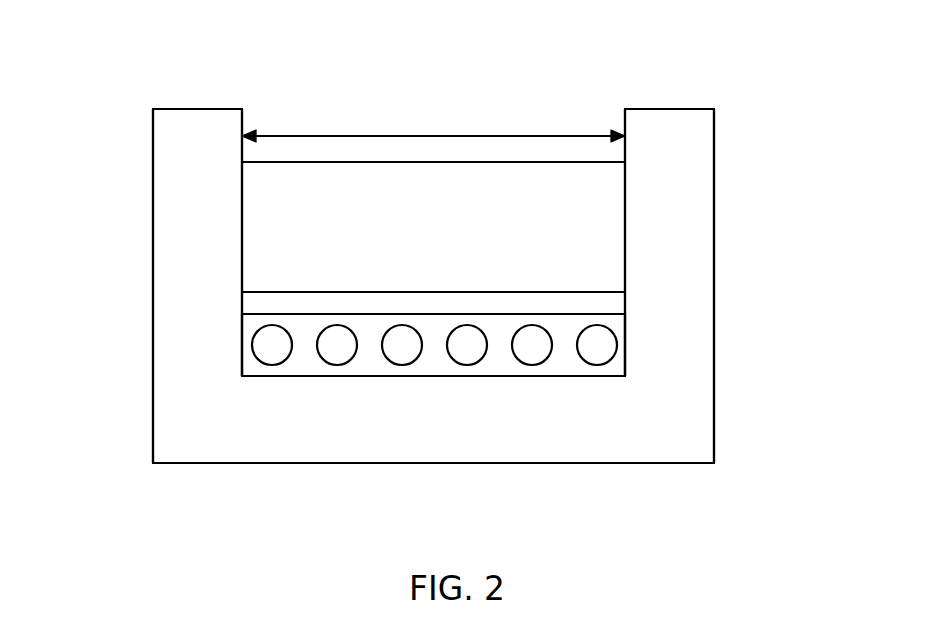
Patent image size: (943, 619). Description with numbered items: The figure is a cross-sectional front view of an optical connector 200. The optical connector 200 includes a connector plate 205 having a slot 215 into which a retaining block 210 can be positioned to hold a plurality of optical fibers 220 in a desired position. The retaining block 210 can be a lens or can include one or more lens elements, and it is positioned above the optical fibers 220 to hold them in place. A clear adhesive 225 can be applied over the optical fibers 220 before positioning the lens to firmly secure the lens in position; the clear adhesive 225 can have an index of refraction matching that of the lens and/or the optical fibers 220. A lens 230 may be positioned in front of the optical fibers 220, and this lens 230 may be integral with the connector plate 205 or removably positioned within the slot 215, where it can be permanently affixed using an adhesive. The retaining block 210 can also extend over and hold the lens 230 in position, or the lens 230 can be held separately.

The optical connector 200 is at (120, 72).
The connector plate 205 is at (172, 208).
The retaining block 210 is at (606, 190).
The slot 215 is at (430, 135).
The optical fibers 220 is at (260, 348).
The clear adhesive 225 is at (255, 302).
The lens 230 is at (615, 368).